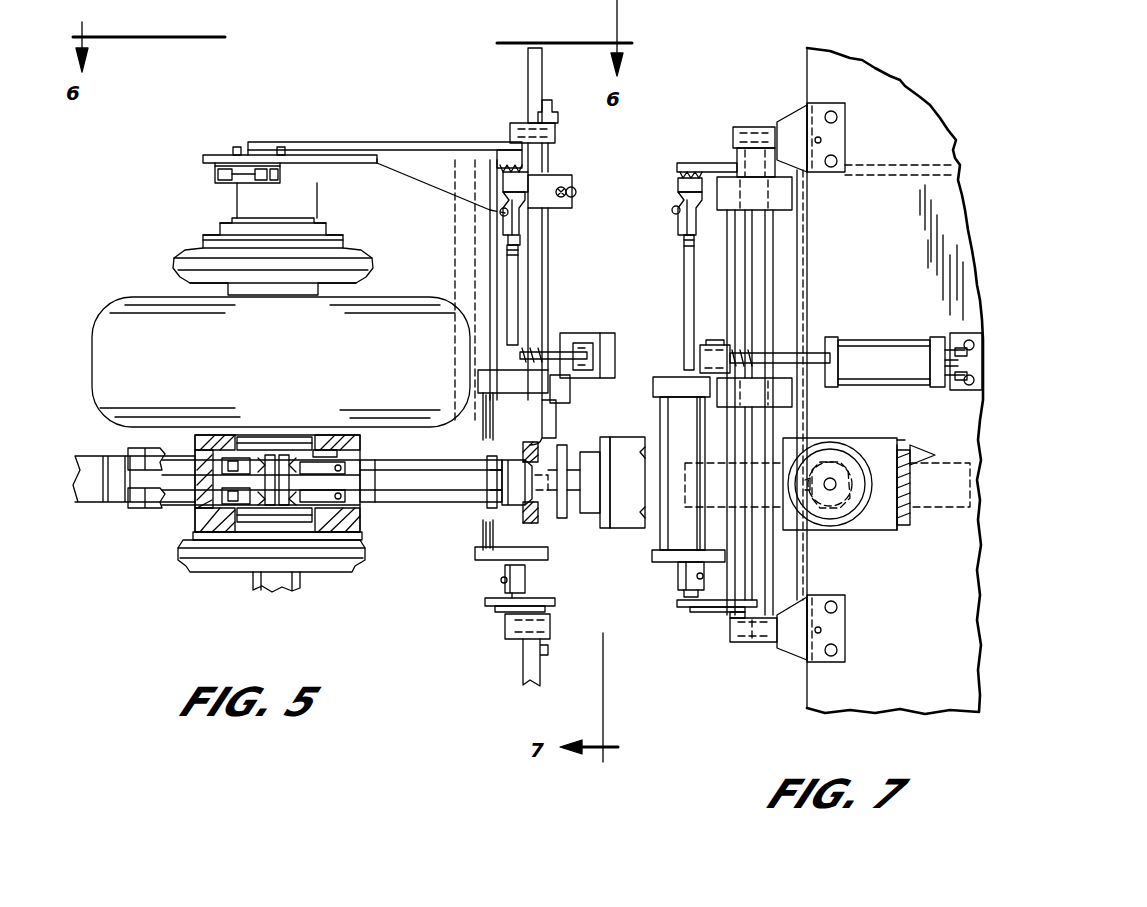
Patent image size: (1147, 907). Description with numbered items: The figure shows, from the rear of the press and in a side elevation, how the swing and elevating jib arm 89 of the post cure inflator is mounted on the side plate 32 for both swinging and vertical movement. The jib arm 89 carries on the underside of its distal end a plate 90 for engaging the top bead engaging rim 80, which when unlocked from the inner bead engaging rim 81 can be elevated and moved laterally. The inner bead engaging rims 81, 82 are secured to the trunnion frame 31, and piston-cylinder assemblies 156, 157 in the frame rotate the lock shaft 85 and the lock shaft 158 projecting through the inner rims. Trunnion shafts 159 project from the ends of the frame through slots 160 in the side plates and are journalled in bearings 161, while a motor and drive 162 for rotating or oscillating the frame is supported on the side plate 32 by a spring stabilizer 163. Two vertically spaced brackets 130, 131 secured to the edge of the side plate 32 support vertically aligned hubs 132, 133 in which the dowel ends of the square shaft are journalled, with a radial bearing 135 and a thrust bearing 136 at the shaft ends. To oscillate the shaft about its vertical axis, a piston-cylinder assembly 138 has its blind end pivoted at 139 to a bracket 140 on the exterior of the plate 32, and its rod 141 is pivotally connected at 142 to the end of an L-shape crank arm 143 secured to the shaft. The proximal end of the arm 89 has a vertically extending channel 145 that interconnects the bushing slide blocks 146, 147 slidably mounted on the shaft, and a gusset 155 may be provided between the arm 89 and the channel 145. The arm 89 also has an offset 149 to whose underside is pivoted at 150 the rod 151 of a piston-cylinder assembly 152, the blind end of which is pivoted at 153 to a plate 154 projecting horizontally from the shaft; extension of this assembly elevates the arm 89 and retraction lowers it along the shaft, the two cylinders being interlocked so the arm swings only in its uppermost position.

In FIG. 5, the trunnion frame 31 is at (92, 512).
In FIG. 5, the side plate 32 is at (527, 62).
In FIG. 7, the side plate 32 is at (806, 70).
In FIG. 5, the top bead engaging rim 80 is at (170, 252).
In FIG. 5, the inner bead engaging rim 81 is at (378, 440).
In FIG. 5, the inner bead engaging rim 82 is at (356, 565).
In FIG. 5, the lock shaft 85 is at (282, 436).
In FIG. 5, the jib arm 89 is at (356, 138).
In FIG. 5, the plate 90 is at (206, 154).
In FIG. 5, the bracket 130 is at (550, 106).
In FIG. 7, the bracket 130 is at (795, 112).
In FIG. 5, the bracket 131 is at (540, 662).
In FIG. 7, the bracket 131 is at (795, 652).
In FIG. 5, the hub 132 is at (556, 131).
In FIG. 7, the hub 132 is at (735, 130).
In FIG. 5, the hub 133 is at (503, 632).
In FIG. 7, the hub 133 is at (730, 640).
In FIG. 7, the radial bearing 135 is at (752, 652).
In FIG. 7, the thrust bearing 136 is at (730, 617).
In FIG. 5, the piston-cylinder assembly 138 is at (612, 333).
In FIG. 7, the piston-cylinder assembly 138 is at (878, 338).
In FIG. 7, the pivot 139 is at (956, 386).
In FIG. 7, the bracket 140 is at (962, 334).
In FIG. 7, the rod 141 is at (797, 345).
In FIG. 5, the pivot 142 is at (576, 372).
In FIG. 7, the pivot 142 is at (705, 345).
In FIG. 5, the L-shape crank arm 143 is at (580, 348).
In FIG. 5, the channel 145 is at (455, 258).
In FIG. 5, the bushing slide block 146 is at (572, 178).
In FIG. 7, the bushing slide block 146 is at (752, 208).
In FIG. 5, the bushing slide block 147 is at (558, 420).
In FIG. 5, the offset 149 is at (503, 150).
In FIG. 7, the offset 149 is at (690, 162).
In FIG. 5, the pivot 150 is at (503, 214).
In FIG. 7, the pivot 150 is at (672, 209).
In FIG. 5, the rod 151 is at (520, 270).
In FIG. 7, the rod 151 is at (684, 255).
In FIG. 5, the piston-cylinder assembly 152 is at (478, 548).
In FIG. 7, the piston-cylinder assembly 152 is at (655, 392).
In FIG. 5, the pivot 153 is at (500, 582).
In FIG. 7, the pivot 153 is at (680, 578).
In FIG. 5, the plate 154 is at (490, 605).
In FIG. 7, the plate 154 is at (680, 604).
In FIG. 5, the gusset 155 is at (392, 178).
In FIG. 5, the piston-cylinder assembly 156 is at (148, 447).
In FIG. 5, the piston-cylinder assembly 157 is at (155, 509).
In FIG. 5, the lock shaft 158 is at (253, 581).
In FIG. 5, the trunnion shaft 159 is at (416, 503).
In FIG. 7, the trunnion shaft 159 is at (822, 515).
In FIG. 5, the slot 160 is at (538, 508).
In FIG. 7, the slot 160 is at (812, 447).
In FIG. 5, the bearing 161 is at (502, 468).
In FIG. 7, the bearing 161 is at (856, 515).
In FIG. 5, the motor and drive 162 is at (618, 530).
In FIG. 7, the motor and drive 162 is at (882, 530).
In FIG. 7, the spring stabilizer 163 is at (906, 492).